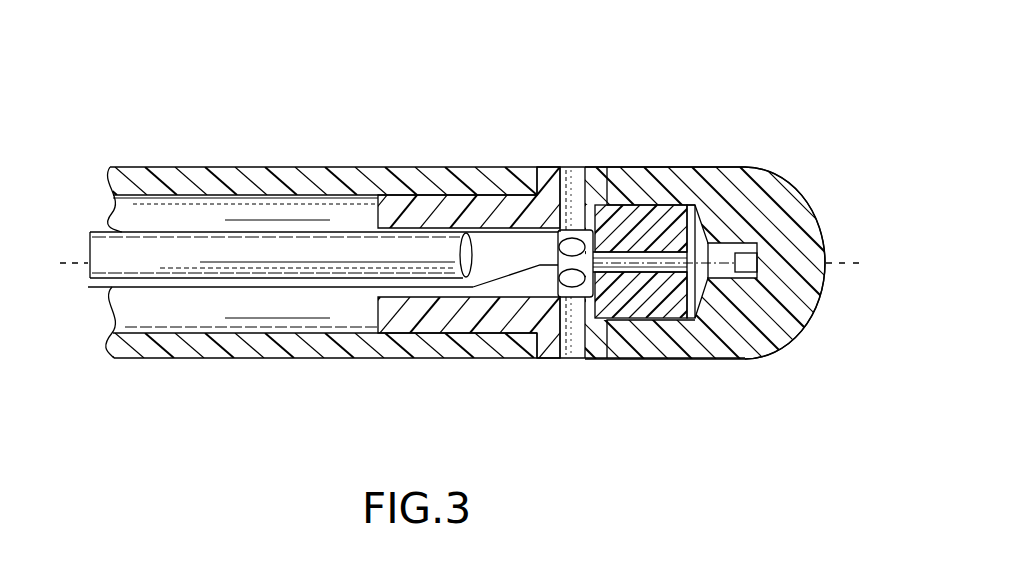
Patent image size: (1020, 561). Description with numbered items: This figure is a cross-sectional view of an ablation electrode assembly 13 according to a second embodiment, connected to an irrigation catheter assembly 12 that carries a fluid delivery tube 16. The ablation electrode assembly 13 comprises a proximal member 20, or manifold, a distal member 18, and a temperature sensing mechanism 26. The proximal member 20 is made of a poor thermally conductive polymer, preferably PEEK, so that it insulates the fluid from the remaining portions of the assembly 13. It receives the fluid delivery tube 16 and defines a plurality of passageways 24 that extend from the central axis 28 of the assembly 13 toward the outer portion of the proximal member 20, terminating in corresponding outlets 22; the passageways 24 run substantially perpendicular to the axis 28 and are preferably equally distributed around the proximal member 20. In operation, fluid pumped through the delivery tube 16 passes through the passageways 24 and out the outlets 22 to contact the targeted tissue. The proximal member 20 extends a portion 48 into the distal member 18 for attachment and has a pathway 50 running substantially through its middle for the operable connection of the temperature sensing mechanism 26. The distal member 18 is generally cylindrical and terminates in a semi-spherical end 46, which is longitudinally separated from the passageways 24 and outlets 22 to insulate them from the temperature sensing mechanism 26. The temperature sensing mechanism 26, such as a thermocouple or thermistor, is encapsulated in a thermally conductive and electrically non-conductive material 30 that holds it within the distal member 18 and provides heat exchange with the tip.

The irrigation catheter assembly 12 is at (322, 110).
The ablation electrode assembly 13 is at (678, 108).
The fluid delivery tube 16 is at (170, 232).
The distal member 18 is at (742, 163).
The proximal member 20 is at (517, 207).
The outlets 22 is at (580, 165).
The passageways 24 is at (570, 207).
The temperature sensing mechanism 26 is at (755, 264).
The central axis 28 is at (466, 249).
The thermally conductive and electrically non-conductive material 30 is at (720, 270).
The end of the distal member 46 is at (812, 316).
The portion of the proximal member 48 is at (648, 303).
The pathway 50 is at (672, 262).